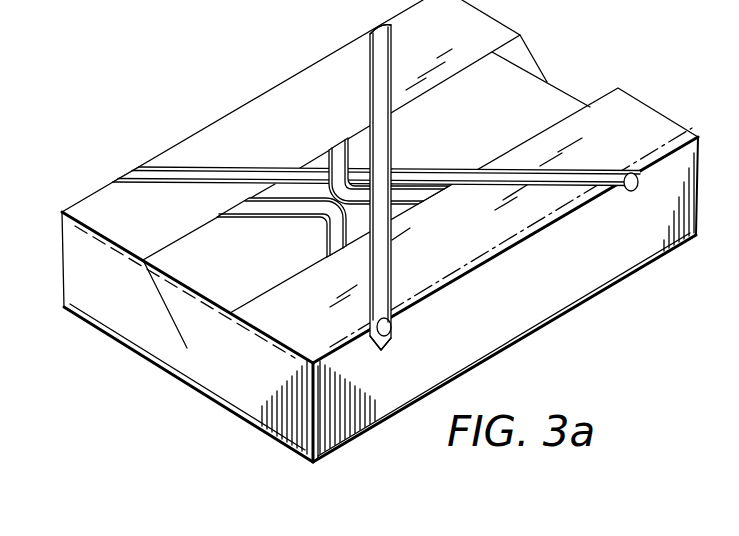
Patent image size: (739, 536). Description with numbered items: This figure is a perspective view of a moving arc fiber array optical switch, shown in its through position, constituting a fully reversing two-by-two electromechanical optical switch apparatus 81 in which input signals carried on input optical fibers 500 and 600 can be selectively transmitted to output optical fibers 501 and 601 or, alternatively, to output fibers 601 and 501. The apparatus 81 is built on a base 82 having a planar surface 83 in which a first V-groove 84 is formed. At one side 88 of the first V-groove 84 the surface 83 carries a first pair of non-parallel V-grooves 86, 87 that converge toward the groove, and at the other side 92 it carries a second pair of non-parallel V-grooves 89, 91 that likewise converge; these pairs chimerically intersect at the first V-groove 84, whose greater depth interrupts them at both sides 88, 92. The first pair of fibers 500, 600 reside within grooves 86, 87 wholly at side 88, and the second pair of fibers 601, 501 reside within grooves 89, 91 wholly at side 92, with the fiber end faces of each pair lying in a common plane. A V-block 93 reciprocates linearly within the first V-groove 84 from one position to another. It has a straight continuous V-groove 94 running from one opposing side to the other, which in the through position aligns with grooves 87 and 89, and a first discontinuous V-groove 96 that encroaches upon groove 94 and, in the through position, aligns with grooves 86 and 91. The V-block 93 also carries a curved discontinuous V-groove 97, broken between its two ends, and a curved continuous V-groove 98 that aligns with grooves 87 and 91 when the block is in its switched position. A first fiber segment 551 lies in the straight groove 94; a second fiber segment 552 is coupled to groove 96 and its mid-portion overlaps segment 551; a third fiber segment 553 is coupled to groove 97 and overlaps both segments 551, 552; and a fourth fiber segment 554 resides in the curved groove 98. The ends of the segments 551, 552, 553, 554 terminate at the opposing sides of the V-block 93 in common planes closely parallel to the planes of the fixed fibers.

The electromechanical optical switch apparatus 81 is at (268, 41).
The base 82 is at (214, 396).
The planar surface 83 is at (118, 232).
The first V-groove 84 is at (165, 360).
The non-parallel V-groove 86 is at (391, 31).
The non-parallel V-groove 87 is at (183, 164).
The one side of the first V-groove 88 is at (518, 55).
The non-parallel V-groove 89 is at (640, 198).
The non-parallel V-groove 91 is at (392, 340).
The other side of the first V-groove 92 is at (603, 97).
The V-block 93 is at (545, 100).
The straight V-groove 94 is at (443, 177).
The first discontinuous V-groove 96 is at (392, 128).
The curved discontinuous V-groove 97 is at (332, 147).
The curved continuous V-groove 98 is at (262, 187).
The input optical fiber 500 is at (380, 33).
The output optical fiber 501 is at (395, 295).
The first fiber segment 551 is at (422, 172).
The second fiber segment 552 is at (378, 132).
The third fiber segment 553 is at (412, 200).
The fourth fiber segment 554 is at (300, 203).
The input optical fiber 600 is at (138, 176).
The output optical fiber 601 is at (627, 190).